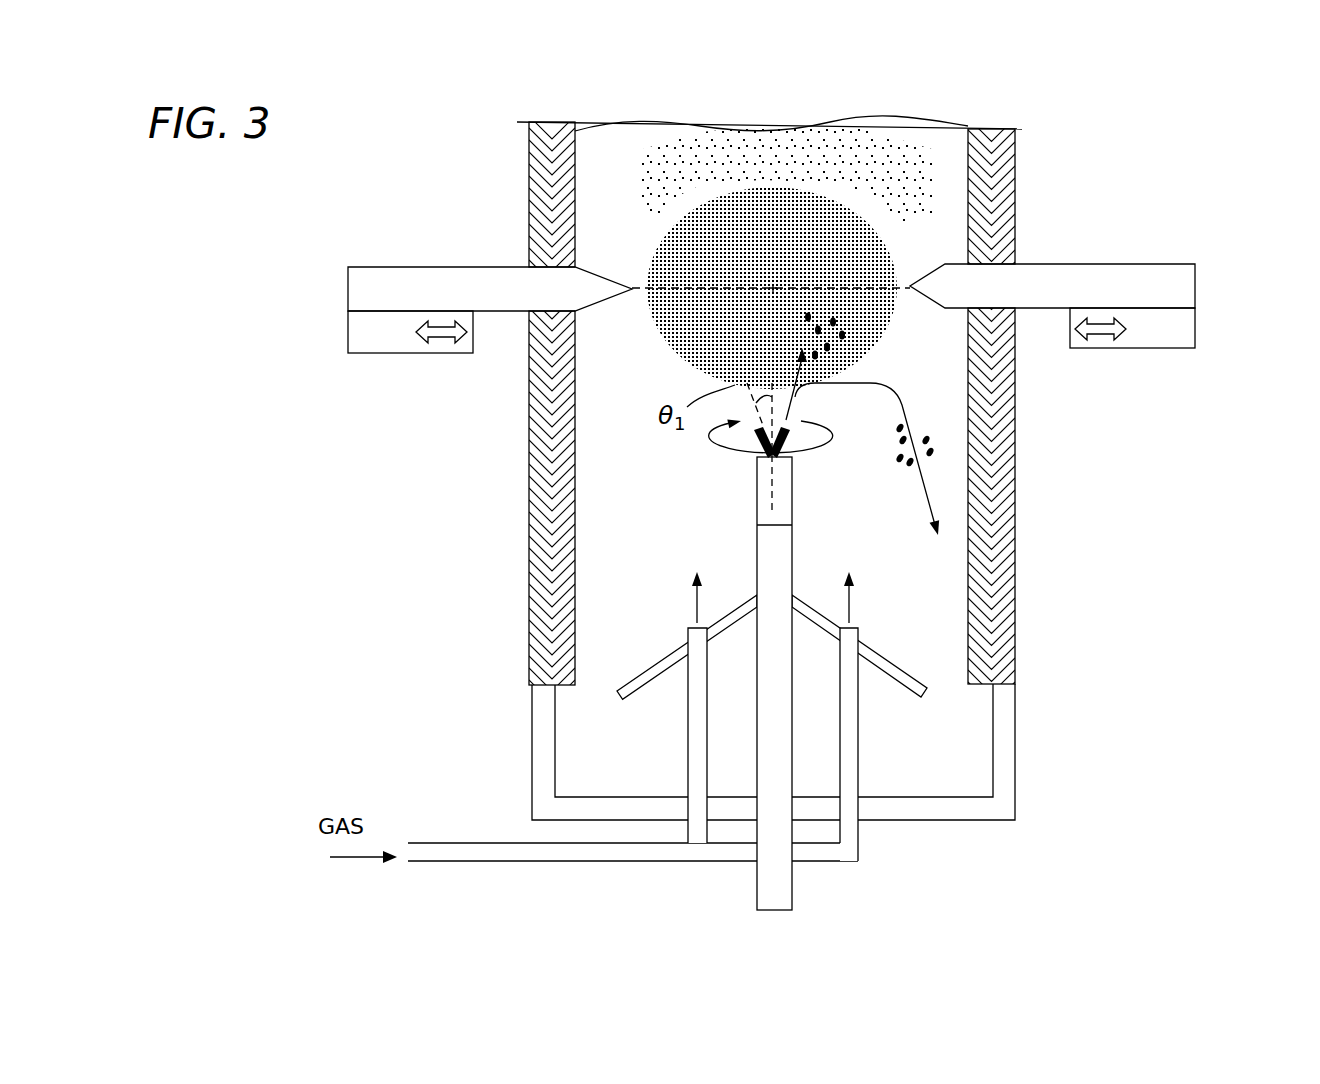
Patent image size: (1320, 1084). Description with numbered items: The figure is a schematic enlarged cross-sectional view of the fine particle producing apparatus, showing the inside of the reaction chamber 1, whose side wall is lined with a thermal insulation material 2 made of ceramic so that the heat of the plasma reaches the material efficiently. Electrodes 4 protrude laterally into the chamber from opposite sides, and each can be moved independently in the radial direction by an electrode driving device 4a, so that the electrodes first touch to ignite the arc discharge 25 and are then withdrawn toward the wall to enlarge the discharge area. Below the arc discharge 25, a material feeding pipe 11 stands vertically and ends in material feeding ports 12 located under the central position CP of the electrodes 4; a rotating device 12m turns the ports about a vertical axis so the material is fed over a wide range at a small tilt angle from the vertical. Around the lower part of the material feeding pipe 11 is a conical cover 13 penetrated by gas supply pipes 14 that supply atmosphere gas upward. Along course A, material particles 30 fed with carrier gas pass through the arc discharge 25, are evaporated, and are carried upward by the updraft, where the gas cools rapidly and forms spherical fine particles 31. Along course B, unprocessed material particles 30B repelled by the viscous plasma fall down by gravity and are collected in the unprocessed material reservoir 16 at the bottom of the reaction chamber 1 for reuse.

The reaction chamber 1 is at (1024, 377).
The thermal insulation material 2 is at (557, 438).
The electrode 4 is at (378, 268).
The electrode driving device 4a is at (372, 348).
The material feeding pipe 11 is at (785, 887).
The material feeding port 12 is at (780, 468).
The rotating device 12m is at (787, 508).
The conical cover 13 is at (643, 678).
The gas supply pipe 14 is at (695, 758).
The unprocessed material reservoir 16 is at (970, 779).
The arc discharge 25 is at (676, 359).
The material particles 30 is at (808, 315).
The unprocessed material particles 30B is at (914, 463).
The fine particles 31 is at (655, 172).
The central position CP is at (768, 285).
The course A is at (808, 372).
The course B is at (930, 494).